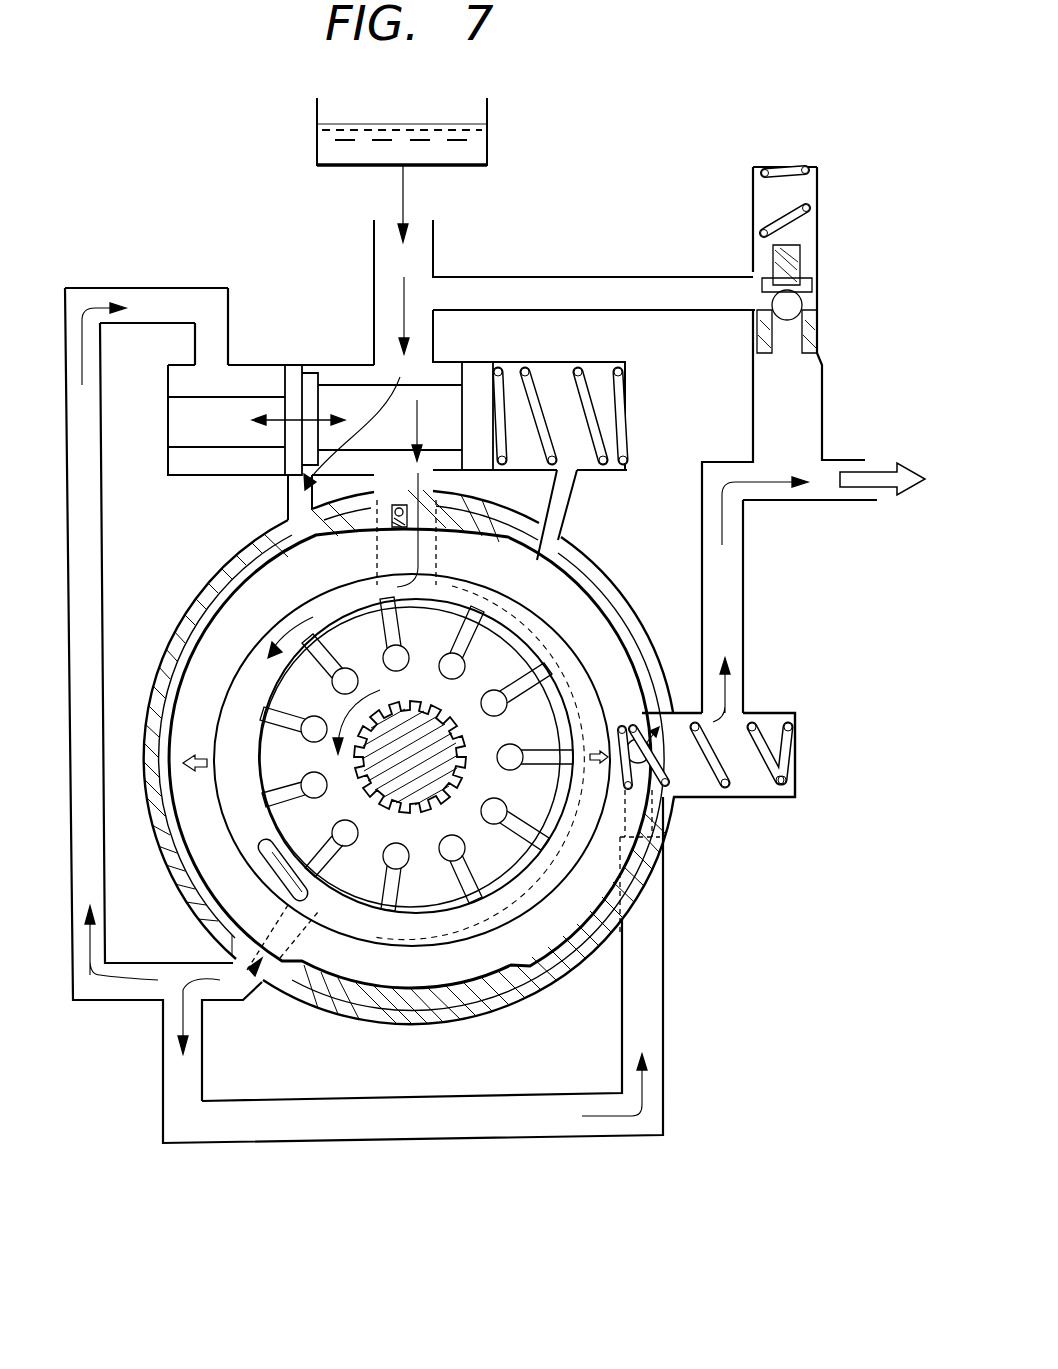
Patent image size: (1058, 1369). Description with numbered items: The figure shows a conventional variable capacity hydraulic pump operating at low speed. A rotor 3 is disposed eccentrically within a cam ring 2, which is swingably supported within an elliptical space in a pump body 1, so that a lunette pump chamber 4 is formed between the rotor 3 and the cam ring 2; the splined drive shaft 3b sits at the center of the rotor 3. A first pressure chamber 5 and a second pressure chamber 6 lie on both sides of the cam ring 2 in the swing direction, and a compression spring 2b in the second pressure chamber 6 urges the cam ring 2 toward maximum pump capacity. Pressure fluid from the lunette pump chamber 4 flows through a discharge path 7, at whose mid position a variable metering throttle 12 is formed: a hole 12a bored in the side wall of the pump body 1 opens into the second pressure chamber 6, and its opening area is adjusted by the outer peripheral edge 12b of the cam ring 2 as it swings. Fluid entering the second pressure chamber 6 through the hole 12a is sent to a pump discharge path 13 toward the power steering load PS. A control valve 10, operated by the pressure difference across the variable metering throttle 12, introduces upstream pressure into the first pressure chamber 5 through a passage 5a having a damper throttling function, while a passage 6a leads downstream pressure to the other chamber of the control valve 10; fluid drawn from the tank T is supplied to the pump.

The pump body 1 is at (808, 619).
The cam ring 2 is at (540, 928).
The compression spring 2b is at (783, 800).
The rotor 3 is at (270, 768).
The drive shaft 3b is at (425, 800).
The lunette pump chamber 4 is at (246, 831).
The first pressure chamber 5 is at (180, 640).
The passage 5a is at (290, 497).
The second pressure chamber 6 is at (603, 628).
The passage 6a is at (566, 497).
The discharge path 7 is at (540, 1138).
The control valve 10 is at (598, 360).
The variable metering throttle 12 is at (648, 782).
The hole 12a is at (640, 718).
The outer peripheral edge 12b is at (626, 777).
The pump discharge path 13 is at (836, 502).
The tank T is at (490, 142).
The power steering unit PS is at (940, 462).